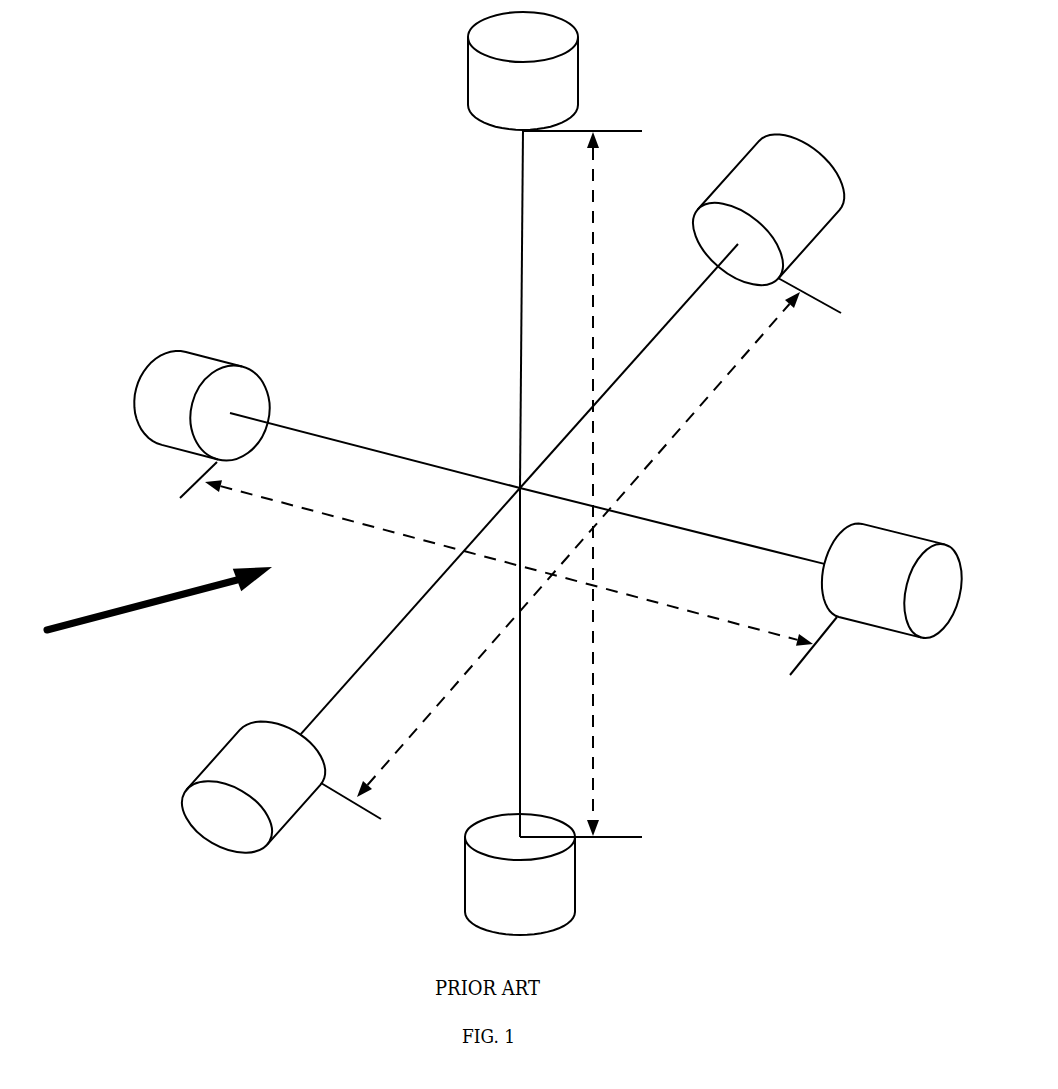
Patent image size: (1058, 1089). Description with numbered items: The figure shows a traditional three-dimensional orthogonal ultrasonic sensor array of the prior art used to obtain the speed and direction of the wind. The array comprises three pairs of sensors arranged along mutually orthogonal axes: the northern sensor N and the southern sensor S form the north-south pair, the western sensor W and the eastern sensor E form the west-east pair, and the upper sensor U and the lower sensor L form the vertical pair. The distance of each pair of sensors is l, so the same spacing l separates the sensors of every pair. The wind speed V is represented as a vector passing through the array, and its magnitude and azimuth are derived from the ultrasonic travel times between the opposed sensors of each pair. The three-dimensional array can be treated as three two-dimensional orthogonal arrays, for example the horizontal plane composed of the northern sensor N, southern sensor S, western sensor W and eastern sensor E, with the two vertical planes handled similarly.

The upper sensor U is at (523, 250).
The lower sensor L is at (520, 711).
The northern sensor N is at (682, 311).
The southern sensor S is at (345, 677).
The eastern sensor E is at (745, 566).
The western sensor W is at (327, 419).
The wind speed V is at (159, 586).
The distance of each pair of sensors l is at (510, 484).